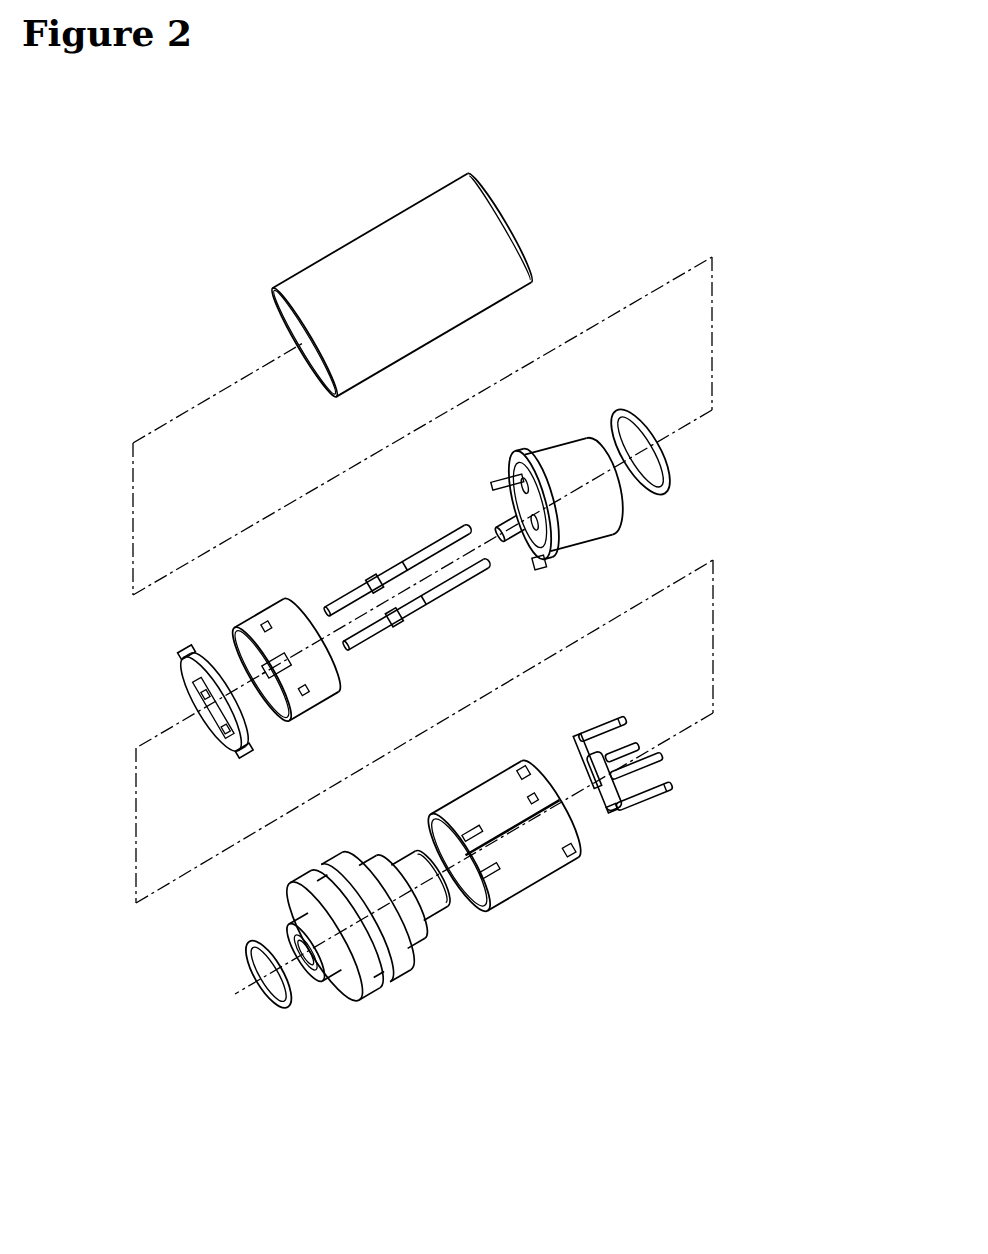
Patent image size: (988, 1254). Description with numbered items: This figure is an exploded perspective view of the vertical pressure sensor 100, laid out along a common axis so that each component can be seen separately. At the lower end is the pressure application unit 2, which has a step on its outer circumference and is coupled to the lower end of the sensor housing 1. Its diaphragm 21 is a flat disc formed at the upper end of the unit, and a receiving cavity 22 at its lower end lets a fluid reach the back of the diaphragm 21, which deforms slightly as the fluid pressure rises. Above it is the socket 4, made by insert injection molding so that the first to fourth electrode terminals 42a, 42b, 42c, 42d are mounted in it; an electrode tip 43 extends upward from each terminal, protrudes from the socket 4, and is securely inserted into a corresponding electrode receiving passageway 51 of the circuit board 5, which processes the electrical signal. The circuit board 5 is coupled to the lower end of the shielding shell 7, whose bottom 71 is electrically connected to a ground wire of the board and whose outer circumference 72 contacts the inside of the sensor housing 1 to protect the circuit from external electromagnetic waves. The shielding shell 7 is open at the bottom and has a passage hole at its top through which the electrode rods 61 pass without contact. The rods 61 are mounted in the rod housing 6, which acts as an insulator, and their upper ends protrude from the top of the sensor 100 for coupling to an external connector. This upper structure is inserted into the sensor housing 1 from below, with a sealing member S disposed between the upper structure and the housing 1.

The vertical pressure sensor 100 is at (716, 146).
The sensor housing 1 is at (378, 233).
The pressure application unit 2 is at (386, 952).
The diaphragm 21 is at (437, 893).
The receiving cavity 22 is at (307, 968).
The socket 4 is at (528, 877).
The first electrode terminal 42a is at (581, 726).
The second electrode terminal 42b is at (648, 729).
The third electrode terminal 42c is at (653, 827).
The fourth electrode terminal 42d is at (683, 759).
The electrode tip 43 is at (626, 716).
The circuit board 5 is at (176, 713).
The electrode receiving passageway 51 is at (179, 667).
The rod housing 6 is at (520, 464).
The electrode rods 61 is at (446, 587).
The shielding shell 7 is at (258, 686).
The bottom of the shielding shell 71 is at (288, 724).
The outer circumference of the shielding shell 72 is at (310, 702).
The sealing member S is at (618, 407).